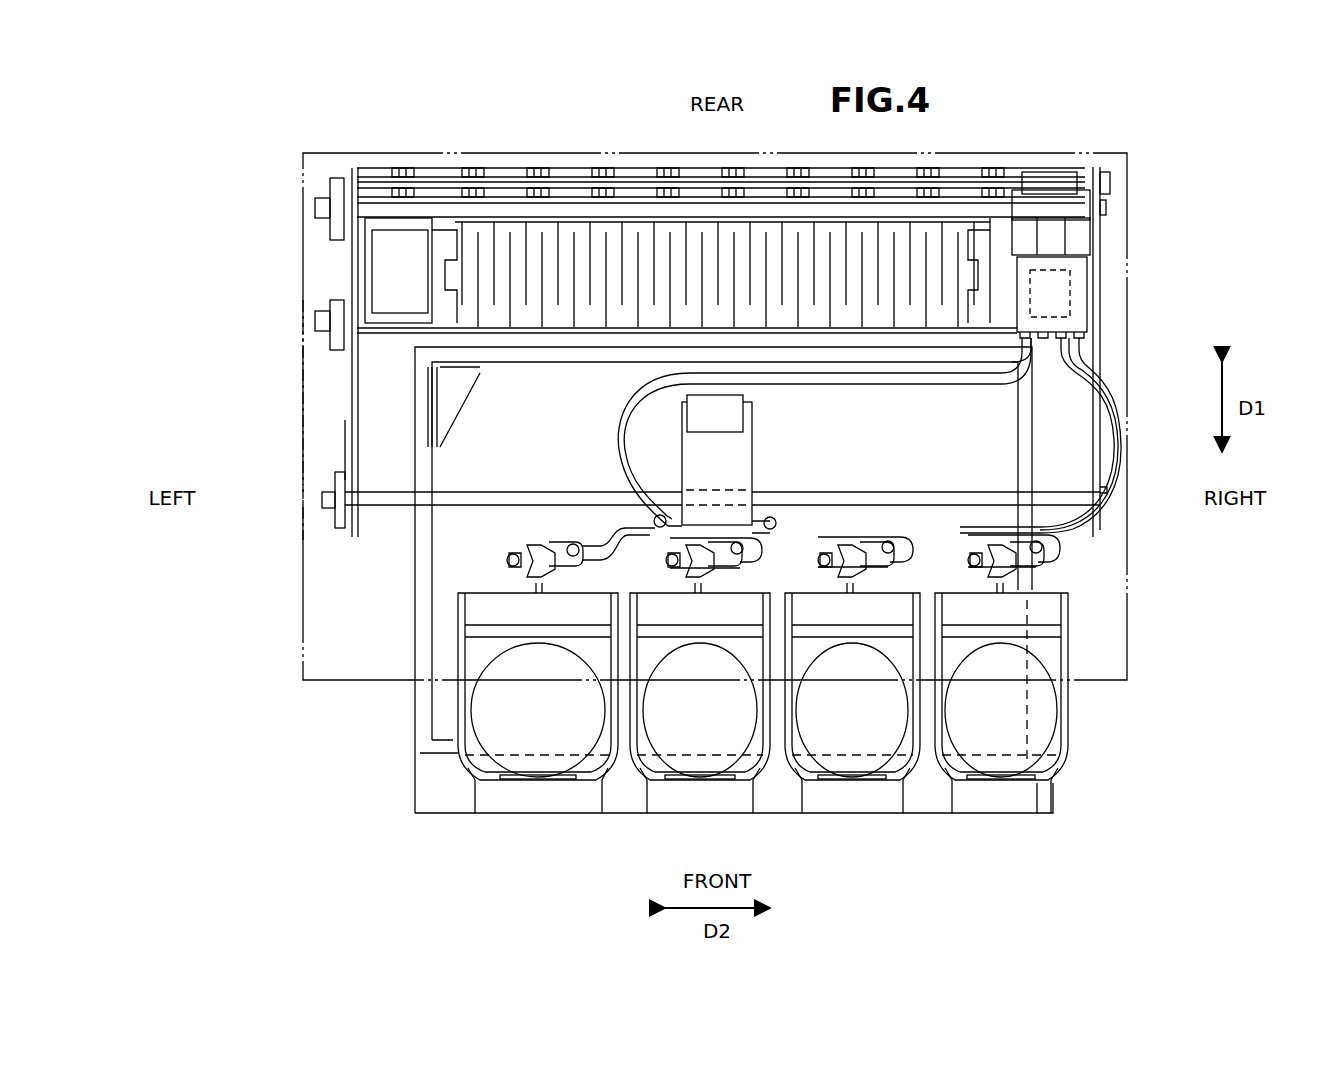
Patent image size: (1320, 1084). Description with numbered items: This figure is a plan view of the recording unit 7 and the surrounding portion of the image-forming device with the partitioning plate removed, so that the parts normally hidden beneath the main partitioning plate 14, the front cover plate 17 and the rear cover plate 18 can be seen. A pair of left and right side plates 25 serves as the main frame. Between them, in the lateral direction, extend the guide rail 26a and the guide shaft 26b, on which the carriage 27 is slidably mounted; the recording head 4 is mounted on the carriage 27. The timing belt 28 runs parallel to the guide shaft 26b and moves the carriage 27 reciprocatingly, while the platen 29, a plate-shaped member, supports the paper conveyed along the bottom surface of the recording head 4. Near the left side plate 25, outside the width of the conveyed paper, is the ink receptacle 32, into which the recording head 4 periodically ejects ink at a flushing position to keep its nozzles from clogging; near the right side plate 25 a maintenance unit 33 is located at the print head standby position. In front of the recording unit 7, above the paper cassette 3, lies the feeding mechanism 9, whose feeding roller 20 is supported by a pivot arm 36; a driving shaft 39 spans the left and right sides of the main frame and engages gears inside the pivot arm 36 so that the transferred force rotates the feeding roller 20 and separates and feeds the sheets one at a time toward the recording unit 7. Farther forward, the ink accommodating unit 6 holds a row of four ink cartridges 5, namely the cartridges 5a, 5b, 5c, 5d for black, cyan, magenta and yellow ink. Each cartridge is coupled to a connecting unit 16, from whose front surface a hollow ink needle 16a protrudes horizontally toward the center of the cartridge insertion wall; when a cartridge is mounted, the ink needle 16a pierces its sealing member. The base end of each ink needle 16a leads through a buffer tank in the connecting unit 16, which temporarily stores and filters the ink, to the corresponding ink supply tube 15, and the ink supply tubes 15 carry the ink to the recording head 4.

The paper cassette 3 is at (405, 590).
The recording head 4 is at (1060, 300).
The ink cartridges 5 is at (763, 725).
The ink cartridge 5a is at (540, 766).
The ink cartridge 5b is at (703, 766).
The ink cartridge 5c is at (852, 766).
The ink cartridge 5d is at (993, 766).
The ink accommodating unit 6 is at (450, 724).
The recording unit 7 is at (982, 152).
The feeding mechanism 9 is at (777, 460).
The main partitioning plate 14 is at (236, 454).
The ink supply tubes 15 is at (620, 450).
The connecting units 16 is at (538, 558).
The ink needle 16a is at (520, 593).
The front cover plate 17 is at (236, 454).
The rear cover plate 18 is at (296, 518).
The feeding roller 20 is at (740, 415).
The side plates 25 is at (352, 420).
The guide rail 26a is at (390, 345).
The guide shaft 26b is at (530, 203).
The carriage 27 is at (1094, 270).
The timing belt 28 is at (460, 178).
The platen 29 is at (750, 240).
The ink receptacle 32 is at (380, 268).
The maintenance unit 33 is at (1094, 322).
The pivot arm 36 is at (735, 472).
The driving shaft 39 is at (398, 500).